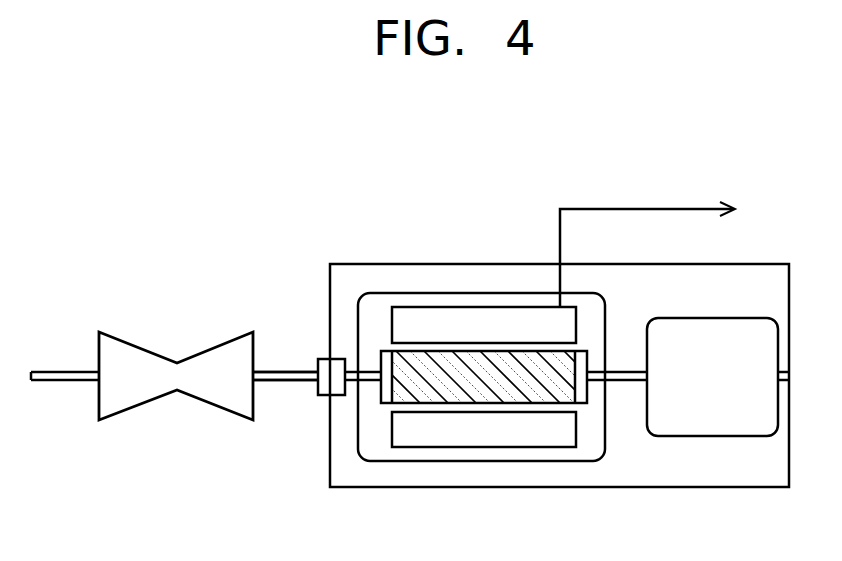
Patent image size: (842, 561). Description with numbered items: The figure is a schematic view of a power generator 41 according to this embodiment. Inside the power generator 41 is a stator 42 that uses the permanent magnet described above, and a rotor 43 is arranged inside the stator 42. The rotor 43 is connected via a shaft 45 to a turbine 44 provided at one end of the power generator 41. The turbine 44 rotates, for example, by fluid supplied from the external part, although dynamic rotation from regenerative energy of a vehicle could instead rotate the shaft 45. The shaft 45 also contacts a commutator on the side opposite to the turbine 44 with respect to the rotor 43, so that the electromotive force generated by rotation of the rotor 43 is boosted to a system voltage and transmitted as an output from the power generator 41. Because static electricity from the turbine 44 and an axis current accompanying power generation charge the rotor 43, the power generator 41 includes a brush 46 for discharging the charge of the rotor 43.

The power generator 41 is at (380, 262).
The stator 42 is at (449, 437).
The rotor 43 is at (497, 395).
The turbine 44 is at (221, 345).
The shaft 45 is at (292, 383).
The brush 46 is at (702, 420).